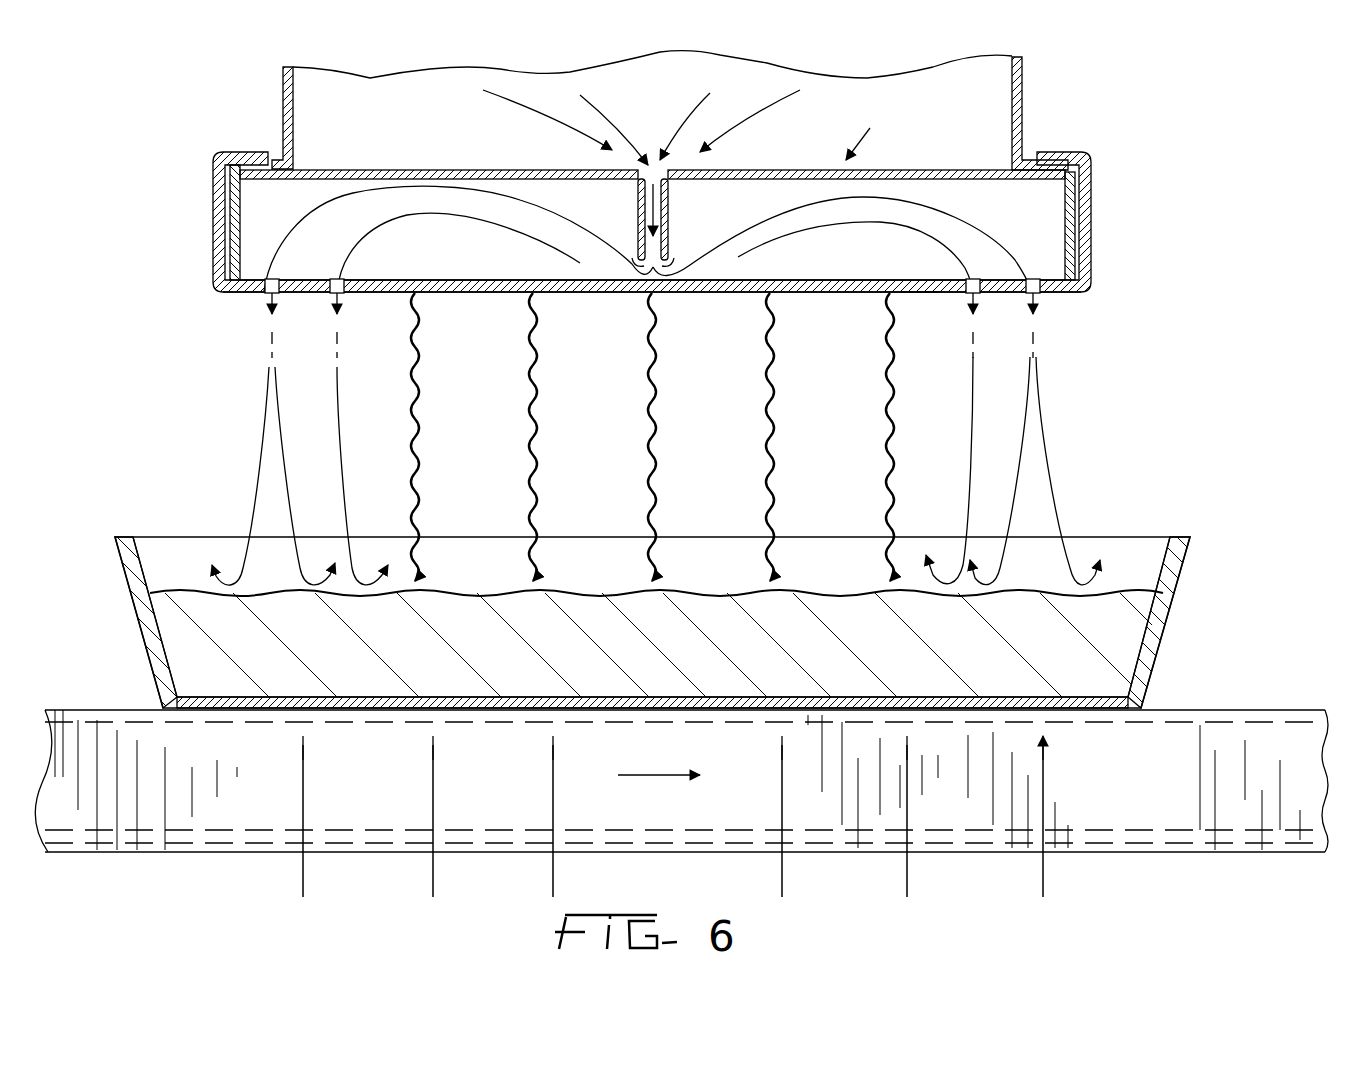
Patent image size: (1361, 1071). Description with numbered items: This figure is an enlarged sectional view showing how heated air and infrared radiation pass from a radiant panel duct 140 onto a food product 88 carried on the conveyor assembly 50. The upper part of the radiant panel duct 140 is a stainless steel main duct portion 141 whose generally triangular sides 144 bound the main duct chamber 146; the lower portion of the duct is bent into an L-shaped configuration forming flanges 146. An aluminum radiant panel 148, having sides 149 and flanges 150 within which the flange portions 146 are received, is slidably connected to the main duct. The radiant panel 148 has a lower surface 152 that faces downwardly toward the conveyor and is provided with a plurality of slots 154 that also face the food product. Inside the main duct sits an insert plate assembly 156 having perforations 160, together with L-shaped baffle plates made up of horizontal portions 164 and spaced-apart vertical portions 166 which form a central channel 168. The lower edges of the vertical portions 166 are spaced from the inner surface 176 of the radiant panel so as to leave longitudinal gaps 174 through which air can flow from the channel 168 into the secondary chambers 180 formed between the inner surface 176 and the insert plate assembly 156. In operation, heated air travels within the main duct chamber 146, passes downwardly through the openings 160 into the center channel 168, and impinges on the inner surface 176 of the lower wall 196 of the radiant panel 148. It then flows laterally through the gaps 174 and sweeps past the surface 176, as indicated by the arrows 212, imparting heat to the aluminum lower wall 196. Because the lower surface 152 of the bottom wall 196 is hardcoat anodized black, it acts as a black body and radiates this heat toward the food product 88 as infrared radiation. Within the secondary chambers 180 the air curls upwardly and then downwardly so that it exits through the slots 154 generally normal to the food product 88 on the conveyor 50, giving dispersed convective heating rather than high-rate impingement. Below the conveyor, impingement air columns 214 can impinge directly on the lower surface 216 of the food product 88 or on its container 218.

The conveyor assembly 50 is at (1266, 694).
The food product 88 is at (1216, 522).
The radiant panel duct 140 is at (1098, 110).
The main duct portion 141 is at (320, 67).
The sides 144 is at (1022, 76).
The main duct chamber 146 is at (466, 133).
The radiant panel 148 is at (1084, 291).
The sides 149 is at (1092, 218).
The flanges 150 is at (232, 151).
The lower surface 152 is at (478, 290).
The slots 154 is at (270, 280).
The insert plate assembly 156 is at (871, 131).
The apertures 160 is at (642, 164).
The horizontal portions 164 is at (362, 170).
The vertical portions 166 is at (640, 202).
The central channel 168 is at (654, 264).
The longitudinal gaps 174 is at (626, 262).
The inner surface 176 is at (796, 283).
The secondary chambers 180 is at (438, 253).
The lower wall 196 is at (920, 292).
The arrows 212 is at (330, 222).
The impingement air columns 214 is at (300, 808).
The lower surface 216 is at (640, 712).
The container 218 is at (1168, 595).